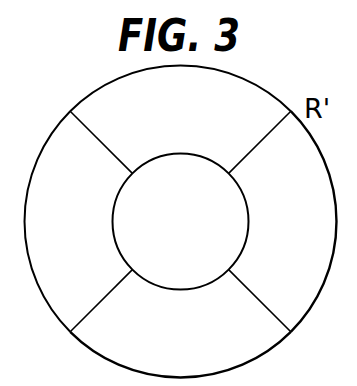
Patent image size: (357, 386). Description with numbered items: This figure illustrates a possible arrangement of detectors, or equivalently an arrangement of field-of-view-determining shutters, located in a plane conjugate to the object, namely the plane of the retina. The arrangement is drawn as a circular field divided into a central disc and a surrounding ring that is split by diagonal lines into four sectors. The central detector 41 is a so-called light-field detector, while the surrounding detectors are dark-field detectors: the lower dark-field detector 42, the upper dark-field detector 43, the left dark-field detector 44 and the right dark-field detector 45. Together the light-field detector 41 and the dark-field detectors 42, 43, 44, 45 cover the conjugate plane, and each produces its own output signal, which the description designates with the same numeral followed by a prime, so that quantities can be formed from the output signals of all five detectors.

The light-field detector 41 is at (193, 238).
The dark-field detector 42 is at (193, 348).
The dark-field detector 43 is at (191, 126).
The dark-field detector 44 is at (84, 238).
The dark-field detector 45 is at (303, 238).